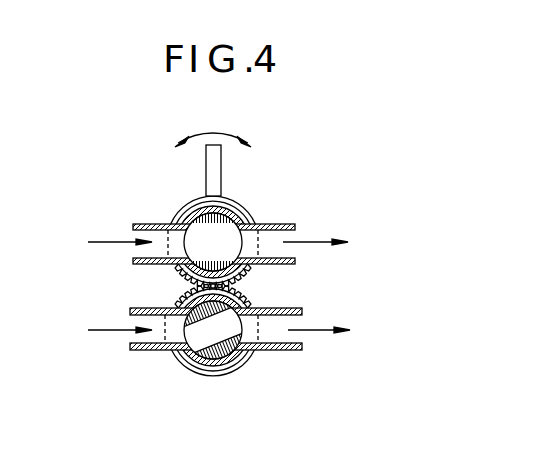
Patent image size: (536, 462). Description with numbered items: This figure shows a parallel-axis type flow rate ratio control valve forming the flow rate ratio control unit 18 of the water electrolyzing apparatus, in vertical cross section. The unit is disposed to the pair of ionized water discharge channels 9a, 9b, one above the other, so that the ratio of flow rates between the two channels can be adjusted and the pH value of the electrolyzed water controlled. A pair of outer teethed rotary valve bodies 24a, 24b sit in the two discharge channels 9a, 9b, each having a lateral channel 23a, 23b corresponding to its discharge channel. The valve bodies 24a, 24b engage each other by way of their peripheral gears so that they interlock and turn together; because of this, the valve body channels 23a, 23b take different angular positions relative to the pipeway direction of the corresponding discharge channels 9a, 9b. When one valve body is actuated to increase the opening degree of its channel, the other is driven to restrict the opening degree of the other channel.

The ionized water discharge channel 9a is at (156, 228).
The ionized water discharge channel 9b is at (146, 345).
The flow rate ratio control unit 18 is at (323, 190).
The lateral channel 23a is at (182, 213).
The lateral channel 23b is at (204, 334).
The outer teethed rotary valve body 24a is at (210, 243).
The outer teethed rotary valve body 24b is at (216, 352).